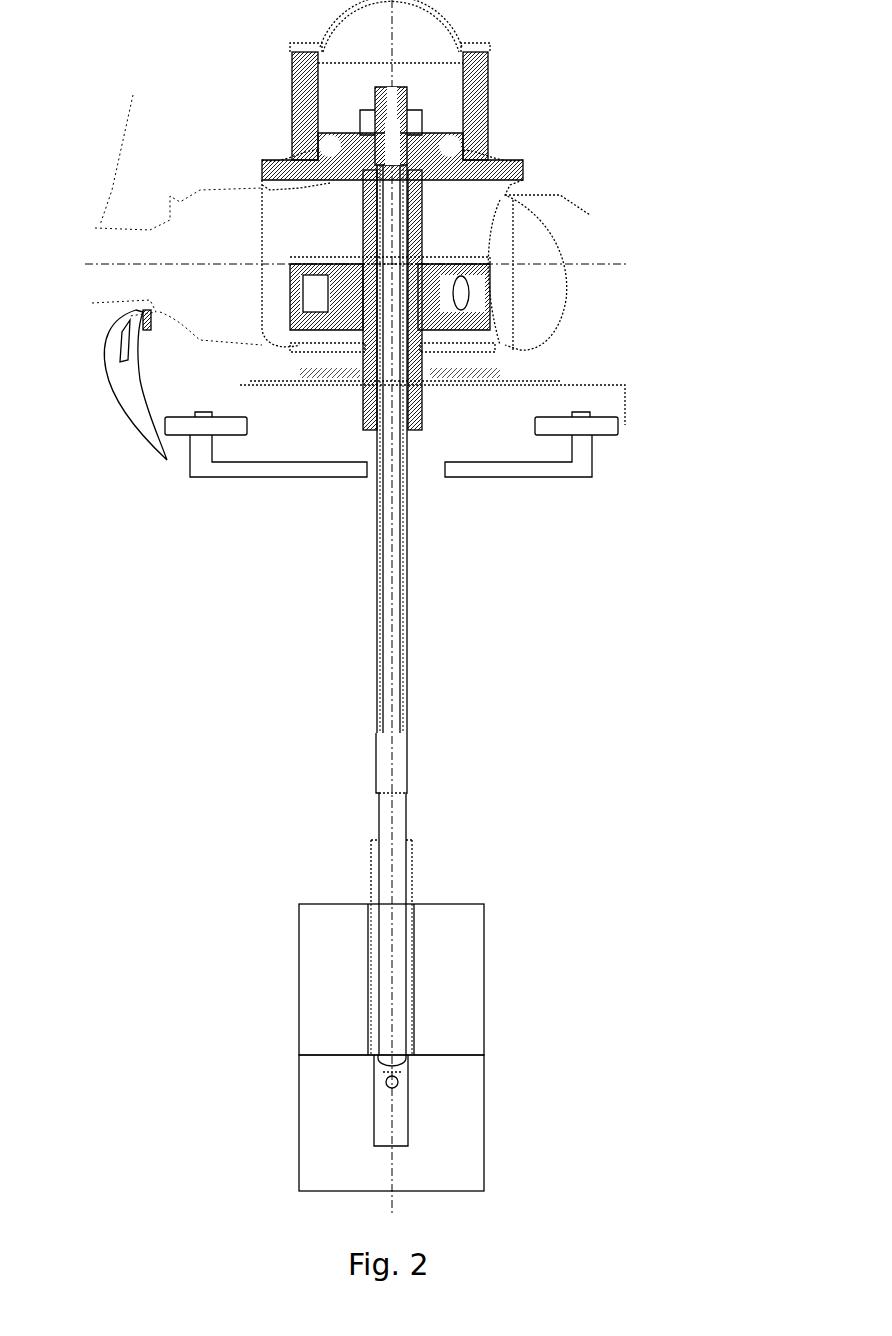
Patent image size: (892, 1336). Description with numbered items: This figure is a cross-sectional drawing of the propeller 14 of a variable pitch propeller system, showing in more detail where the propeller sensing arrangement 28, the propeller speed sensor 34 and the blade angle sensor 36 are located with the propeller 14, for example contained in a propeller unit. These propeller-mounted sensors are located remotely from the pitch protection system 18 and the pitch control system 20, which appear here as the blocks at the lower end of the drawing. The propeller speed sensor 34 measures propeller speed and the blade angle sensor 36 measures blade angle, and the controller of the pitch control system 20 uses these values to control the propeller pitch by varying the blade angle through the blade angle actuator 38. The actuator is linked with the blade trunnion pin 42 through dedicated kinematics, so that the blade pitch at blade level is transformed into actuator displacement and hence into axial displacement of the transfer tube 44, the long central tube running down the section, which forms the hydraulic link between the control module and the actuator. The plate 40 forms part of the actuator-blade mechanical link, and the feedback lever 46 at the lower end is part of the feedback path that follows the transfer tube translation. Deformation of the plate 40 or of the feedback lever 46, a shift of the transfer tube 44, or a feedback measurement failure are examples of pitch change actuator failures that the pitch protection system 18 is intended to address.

The propeller 14 is at (376, 290).
The pitch protection system 18 is at (462, 950).
The pitch control system 20 is at (467, 1104).
The propeller sensing arrangement 28 is at (592, 423).
The propeller speed sensor 34 is at (563, 514).
The blade angle sensor 36 is at (198, 423).
The blade angle actuator 38 is at (462, 1080).
The plate 40 is at (475, 325).
The blade trunnion pin 42 is at (475, 300).
The transfer tube 44 is at (400, 636).
The feedback lever 46 is at (390, 1077).